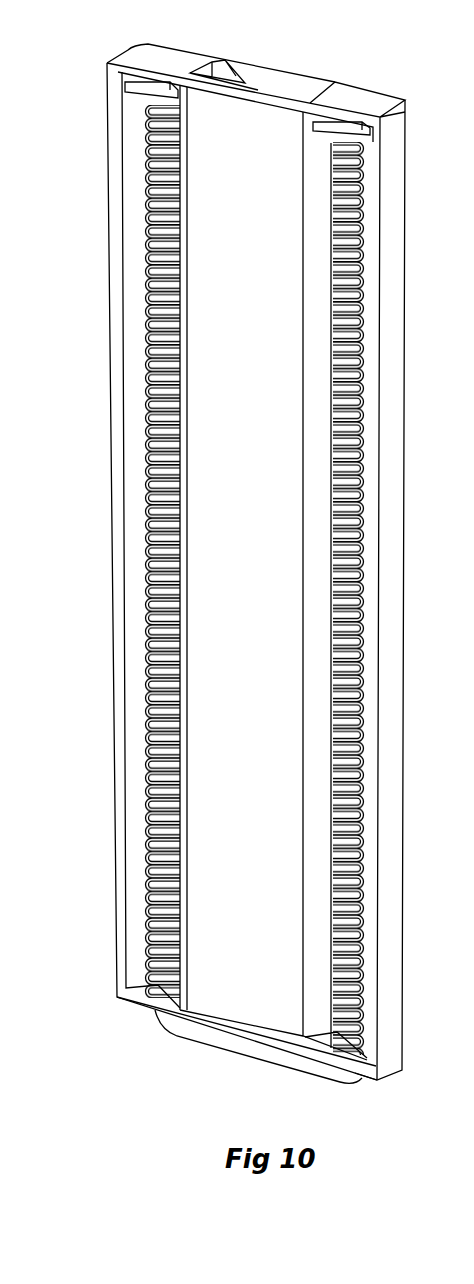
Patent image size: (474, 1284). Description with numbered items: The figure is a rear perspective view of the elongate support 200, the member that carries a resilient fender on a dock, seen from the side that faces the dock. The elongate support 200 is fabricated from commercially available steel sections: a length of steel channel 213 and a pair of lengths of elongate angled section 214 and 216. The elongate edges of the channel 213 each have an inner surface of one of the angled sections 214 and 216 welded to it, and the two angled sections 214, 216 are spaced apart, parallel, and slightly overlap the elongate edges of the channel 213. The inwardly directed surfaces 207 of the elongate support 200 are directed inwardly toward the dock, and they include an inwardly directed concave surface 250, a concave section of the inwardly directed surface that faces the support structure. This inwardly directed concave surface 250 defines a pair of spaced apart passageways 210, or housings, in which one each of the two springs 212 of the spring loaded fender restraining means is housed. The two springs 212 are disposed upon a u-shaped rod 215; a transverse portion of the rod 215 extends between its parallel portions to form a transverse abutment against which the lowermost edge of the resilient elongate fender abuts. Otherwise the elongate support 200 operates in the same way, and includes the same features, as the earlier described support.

The elongate support 200 is at (304, 55).
The inwardly directed surfaces 207 is at (228, 197).
The passageways 210 is at (305, 278).
The springs 212 is at (332, 345).
The steel channel 213 is at (243, 83).
The elongate angled section 214 is at (362, 90).
The u-shaped rod 215 is at (218, 1040).
The elongate angled section 216 is at (165, 58).
The inwardly directed concave surface 250 is at (131, 120).